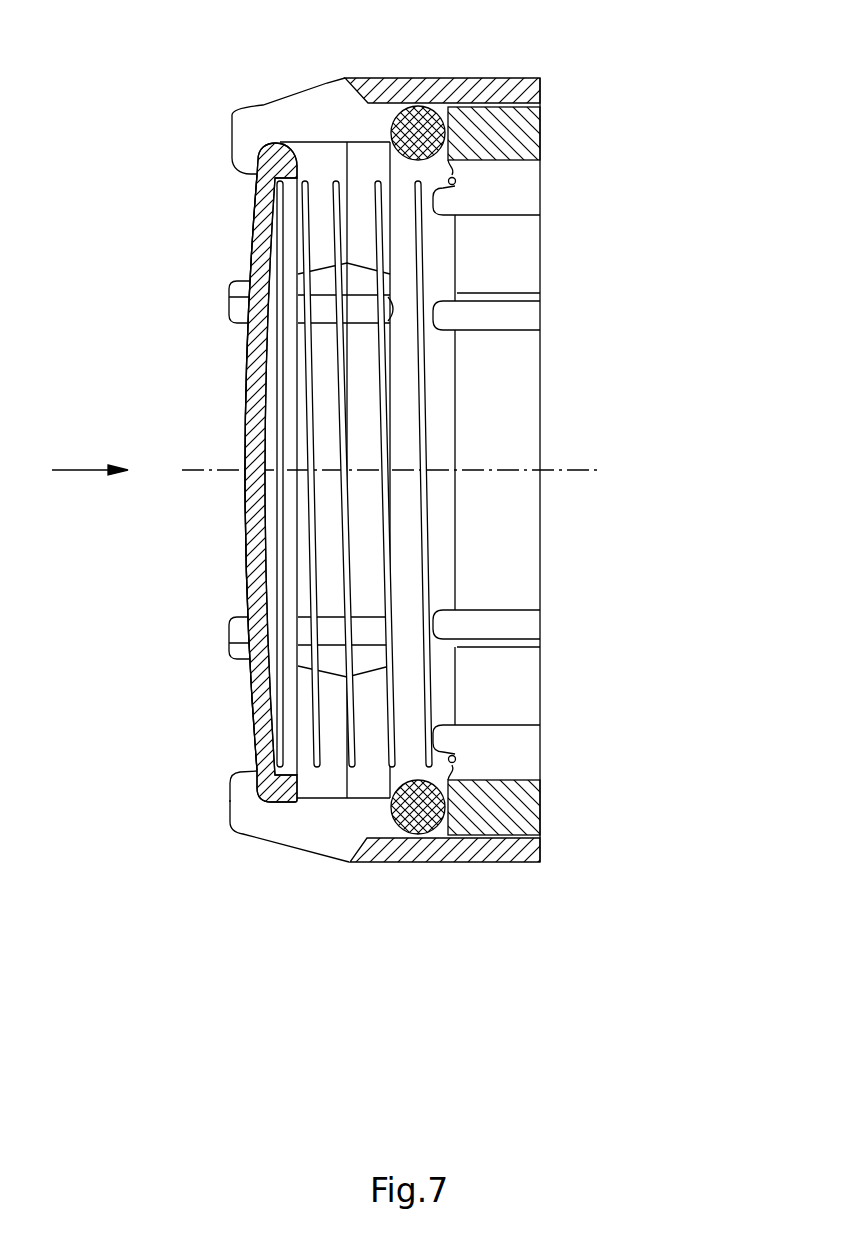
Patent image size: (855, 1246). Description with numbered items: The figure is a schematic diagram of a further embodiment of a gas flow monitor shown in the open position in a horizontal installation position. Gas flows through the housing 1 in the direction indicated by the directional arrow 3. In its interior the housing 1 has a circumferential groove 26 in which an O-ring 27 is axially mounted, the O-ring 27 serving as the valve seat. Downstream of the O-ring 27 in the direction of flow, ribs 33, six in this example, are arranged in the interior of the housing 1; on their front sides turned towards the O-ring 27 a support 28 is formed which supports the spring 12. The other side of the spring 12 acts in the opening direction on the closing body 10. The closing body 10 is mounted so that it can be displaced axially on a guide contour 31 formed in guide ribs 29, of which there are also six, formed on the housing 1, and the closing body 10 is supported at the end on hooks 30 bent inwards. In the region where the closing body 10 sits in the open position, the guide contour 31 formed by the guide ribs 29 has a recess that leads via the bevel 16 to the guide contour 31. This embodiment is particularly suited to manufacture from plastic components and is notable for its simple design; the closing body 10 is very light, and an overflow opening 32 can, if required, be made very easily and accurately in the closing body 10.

The housing 1 is at (502, 135).
The directional arrow 3 is at (77, 472).
The closing body 10 is at (257, 425).
The spring 12 is at (338, 232).
The bevel 16 is at (282, 141).
The circumferential groove 26 is at (442, 107).
The O-ring 27 is at (453, 837).
The support 28 is at (453, 172).
The guide ribs 29 is at (292, 822).
The hooks 30 is at (247, 787).
The guide contour 31 is at (357, 797).
The overflow opening 32 is at (258, 486).
The ribs 33 is at (500, 623).